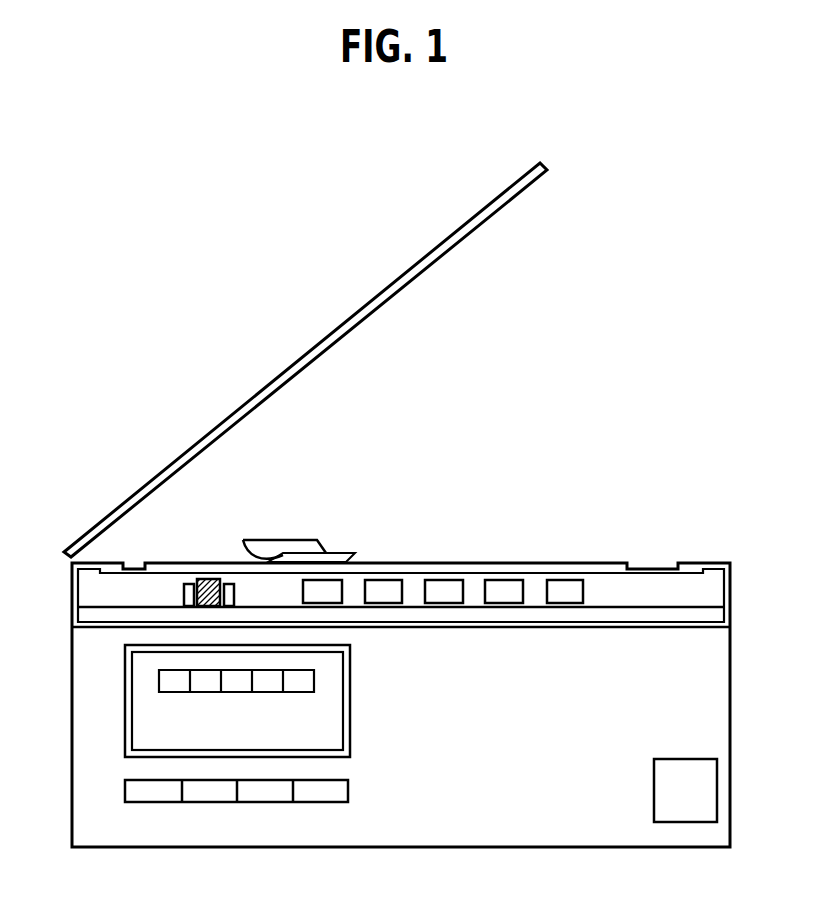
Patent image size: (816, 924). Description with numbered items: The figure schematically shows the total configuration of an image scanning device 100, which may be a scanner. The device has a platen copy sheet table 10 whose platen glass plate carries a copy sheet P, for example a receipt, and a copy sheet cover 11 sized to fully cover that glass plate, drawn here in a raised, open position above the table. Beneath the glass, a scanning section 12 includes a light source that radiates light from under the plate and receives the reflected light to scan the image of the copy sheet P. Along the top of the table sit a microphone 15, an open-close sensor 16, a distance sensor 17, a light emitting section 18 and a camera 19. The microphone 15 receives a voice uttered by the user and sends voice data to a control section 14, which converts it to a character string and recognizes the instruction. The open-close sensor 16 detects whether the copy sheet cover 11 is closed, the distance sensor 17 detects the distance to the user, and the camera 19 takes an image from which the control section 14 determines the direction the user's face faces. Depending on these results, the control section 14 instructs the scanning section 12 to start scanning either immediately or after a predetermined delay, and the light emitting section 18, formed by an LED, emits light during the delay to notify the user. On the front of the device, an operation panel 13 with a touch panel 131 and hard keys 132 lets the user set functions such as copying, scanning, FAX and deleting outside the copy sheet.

The image scanning device 100 is at (621, 191).
The platen copy sheet table 10 is at (652, 569).
The copy sheet cover 11 is at (382, 291).
The copy sheet P is at (288, 540).
The scanning section 12 is at (207, 579).
The operation panel 13 is at (277, 736).
The touch panel 131 is at (195, 748).
The hard keys 132 is at (208, 803).
The control section 14 is at (686, 758).
The microphone 15 is at (323, 587).
The open-close sensor 16 is at (380, 593).
The distance sensor 17 is at (443, 593).
The light emitting section 18 is at (502, 593).
The camera 19 is at (568, 592).